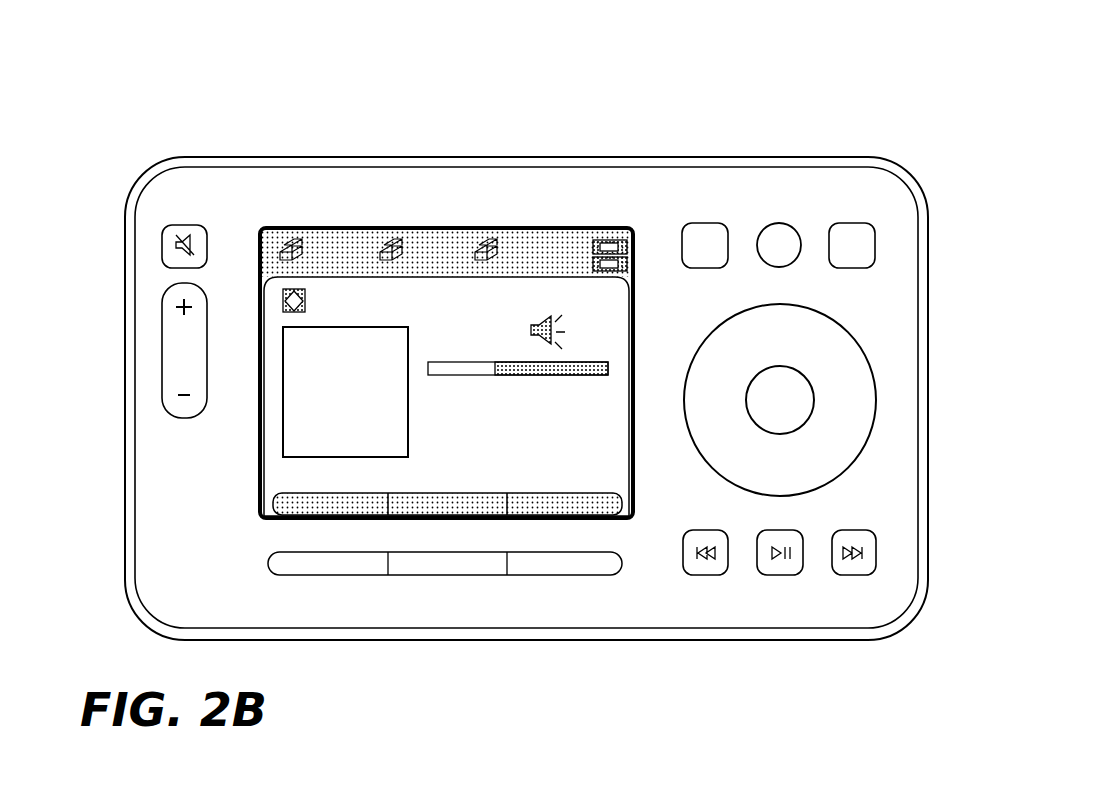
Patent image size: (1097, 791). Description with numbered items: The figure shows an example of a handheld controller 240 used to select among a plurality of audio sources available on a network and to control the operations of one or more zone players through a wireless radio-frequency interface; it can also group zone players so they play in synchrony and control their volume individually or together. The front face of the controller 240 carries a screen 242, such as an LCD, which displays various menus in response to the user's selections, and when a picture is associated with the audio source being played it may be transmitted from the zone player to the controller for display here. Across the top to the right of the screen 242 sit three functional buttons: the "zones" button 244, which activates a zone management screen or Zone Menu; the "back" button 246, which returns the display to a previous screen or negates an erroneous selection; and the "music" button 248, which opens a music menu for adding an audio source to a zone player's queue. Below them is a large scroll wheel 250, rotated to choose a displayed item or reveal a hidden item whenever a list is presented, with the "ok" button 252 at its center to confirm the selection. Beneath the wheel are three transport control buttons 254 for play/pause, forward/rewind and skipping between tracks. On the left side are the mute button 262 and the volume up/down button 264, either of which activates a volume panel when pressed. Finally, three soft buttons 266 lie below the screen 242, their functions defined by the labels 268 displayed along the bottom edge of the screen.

The controller 240 is at (610, 331).
The screen 242 is at (380, 228).
The "zones" button 244 is at (700, 235).
The "back" button 246 is at (778, 235).
The "music" button 248 is at (850, 235).
The scroll wheel 250 is at (855, 368).
The "ok" button 252 is at (795, 417).
The transport control buttons 254 is at (710, 573).
The mute button 262 is at (167, 240).
The volume up/down button 264 is at (167, 338).
The soft buttons 266 is at (343, 558).
The labels 268 is at (483, 507).